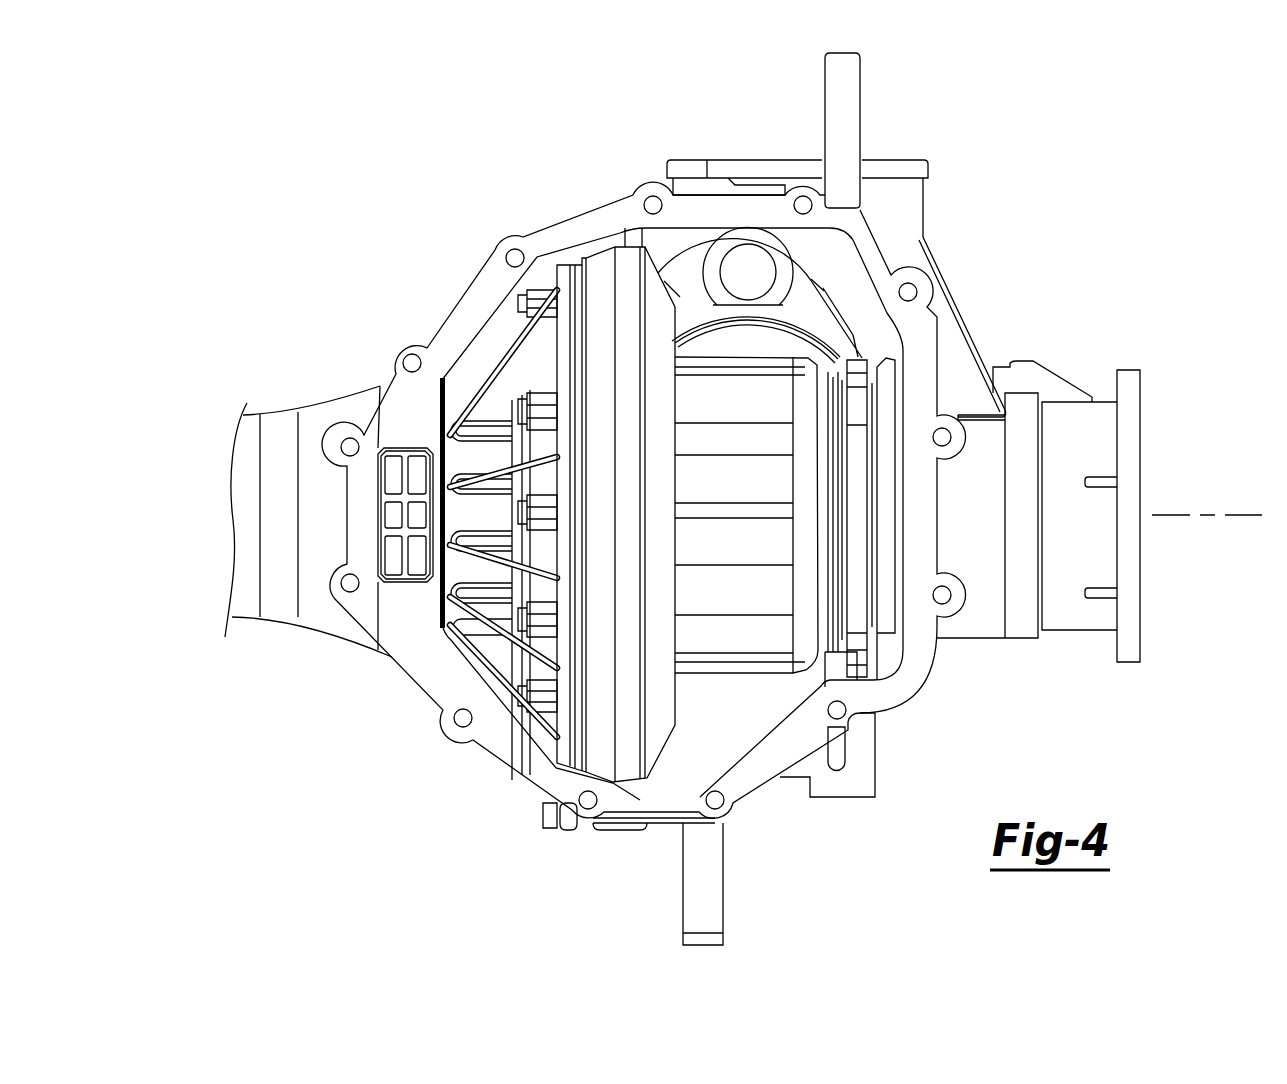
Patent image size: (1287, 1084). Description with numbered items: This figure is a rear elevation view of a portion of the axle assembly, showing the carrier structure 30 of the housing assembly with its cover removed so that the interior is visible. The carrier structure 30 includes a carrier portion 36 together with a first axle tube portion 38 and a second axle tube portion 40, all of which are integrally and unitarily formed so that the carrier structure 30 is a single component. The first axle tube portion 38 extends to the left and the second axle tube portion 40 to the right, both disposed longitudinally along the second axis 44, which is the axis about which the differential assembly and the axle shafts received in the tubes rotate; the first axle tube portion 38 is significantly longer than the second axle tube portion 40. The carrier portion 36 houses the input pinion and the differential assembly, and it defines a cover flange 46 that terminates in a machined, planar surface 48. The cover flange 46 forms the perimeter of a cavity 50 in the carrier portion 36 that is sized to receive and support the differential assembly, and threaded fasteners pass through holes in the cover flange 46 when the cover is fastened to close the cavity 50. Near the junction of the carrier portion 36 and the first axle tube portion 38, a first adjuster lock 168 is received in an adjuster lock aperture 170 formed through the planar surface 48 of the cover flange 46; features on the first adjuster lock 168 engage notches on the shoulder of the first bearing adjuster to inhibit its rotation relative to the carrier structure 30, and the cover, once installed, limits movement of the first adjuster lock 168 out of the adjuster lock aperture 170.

The carrier structure 30 is at (942, 225).
The carrier portion 36 is at (944, 333).
The first axle tube portion 38 is at (243, 455).
The second axle tube portion 40 is at (993, 627).
The second axis 44 is at (1186, 512).
The cover flange 46 is at (433, 680).
The planar surface 48 is at (515, 768).
The cavity 50 is at (735, 728).
The first adjuster lock 168 is at (408, 553).
The adjuster lock aperture 170 is at (388, 450).